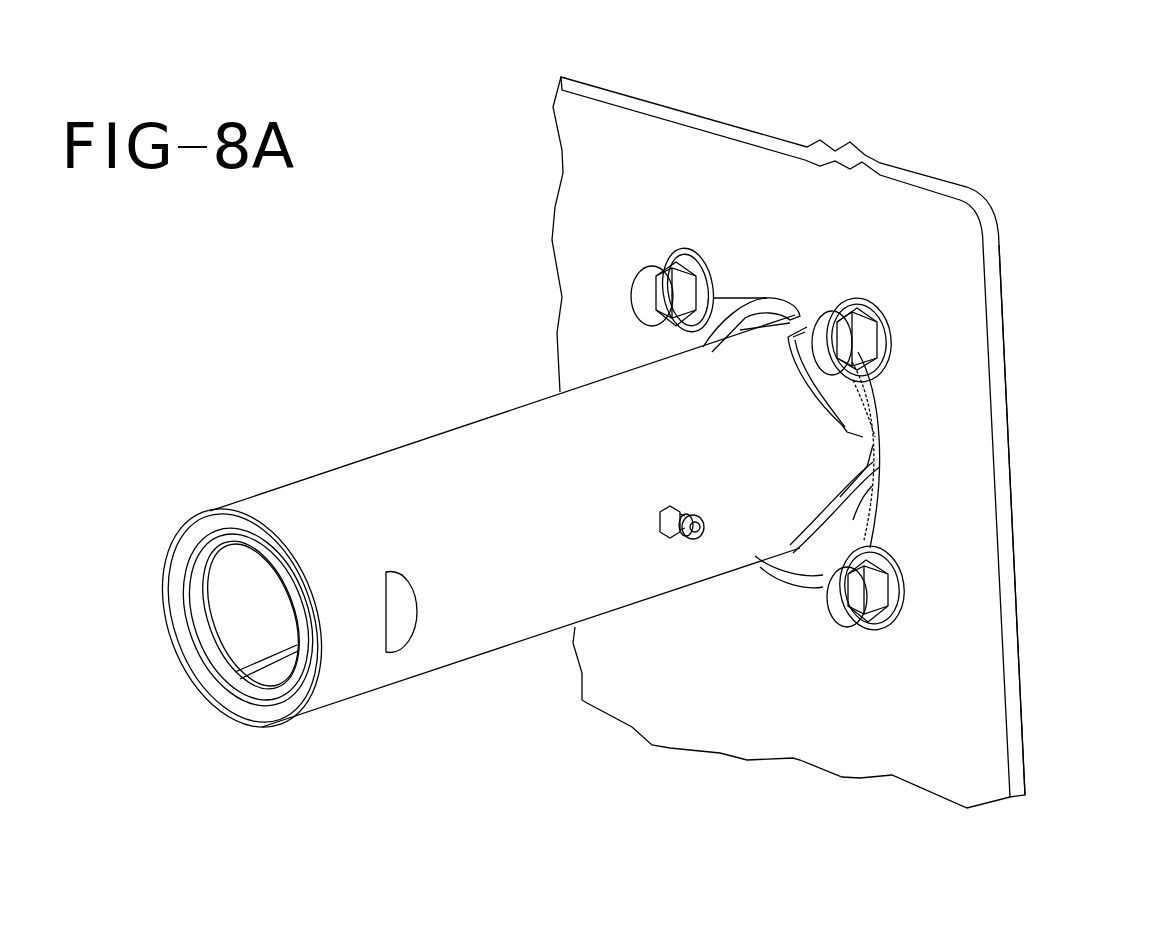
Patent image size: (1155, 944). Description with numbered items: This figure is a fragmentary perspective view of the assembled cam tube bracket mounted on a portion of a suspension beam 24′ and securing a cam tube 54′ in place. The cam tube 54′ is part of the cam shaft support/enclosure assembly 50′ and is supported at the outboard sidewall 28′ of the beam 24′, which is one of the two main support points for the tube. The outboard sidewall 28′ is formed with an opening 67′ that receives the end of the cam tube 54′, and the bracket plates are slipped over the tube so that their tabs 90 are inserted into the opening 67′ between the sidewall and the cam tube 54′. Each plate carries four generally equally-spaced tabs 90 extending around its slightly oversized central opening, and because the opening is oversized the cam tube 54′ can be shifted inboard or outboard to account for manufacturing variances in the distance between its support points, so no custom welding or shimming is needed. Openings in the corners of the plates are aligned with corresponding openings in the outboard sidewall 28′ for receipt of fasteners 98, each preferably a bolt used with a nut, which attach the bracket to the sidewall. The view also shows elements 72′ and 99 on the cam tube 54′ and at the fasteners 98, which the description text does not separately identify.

The suspension beam 24′ is at (907, 168).
The outboard sidewall 28′ is at (1012, 374).
The cam shaft support/enclosure assembly 50′ is at (317, 465).
The cam tube 54′ is at (350, 702).
The opening 67′ is at (882, 458).
The fitting 72′ is at (693, 540).
The tabs 90 is at (752, 313).
The fastener 98 is at (645, 246).
The washer 99 is at (688, 252).